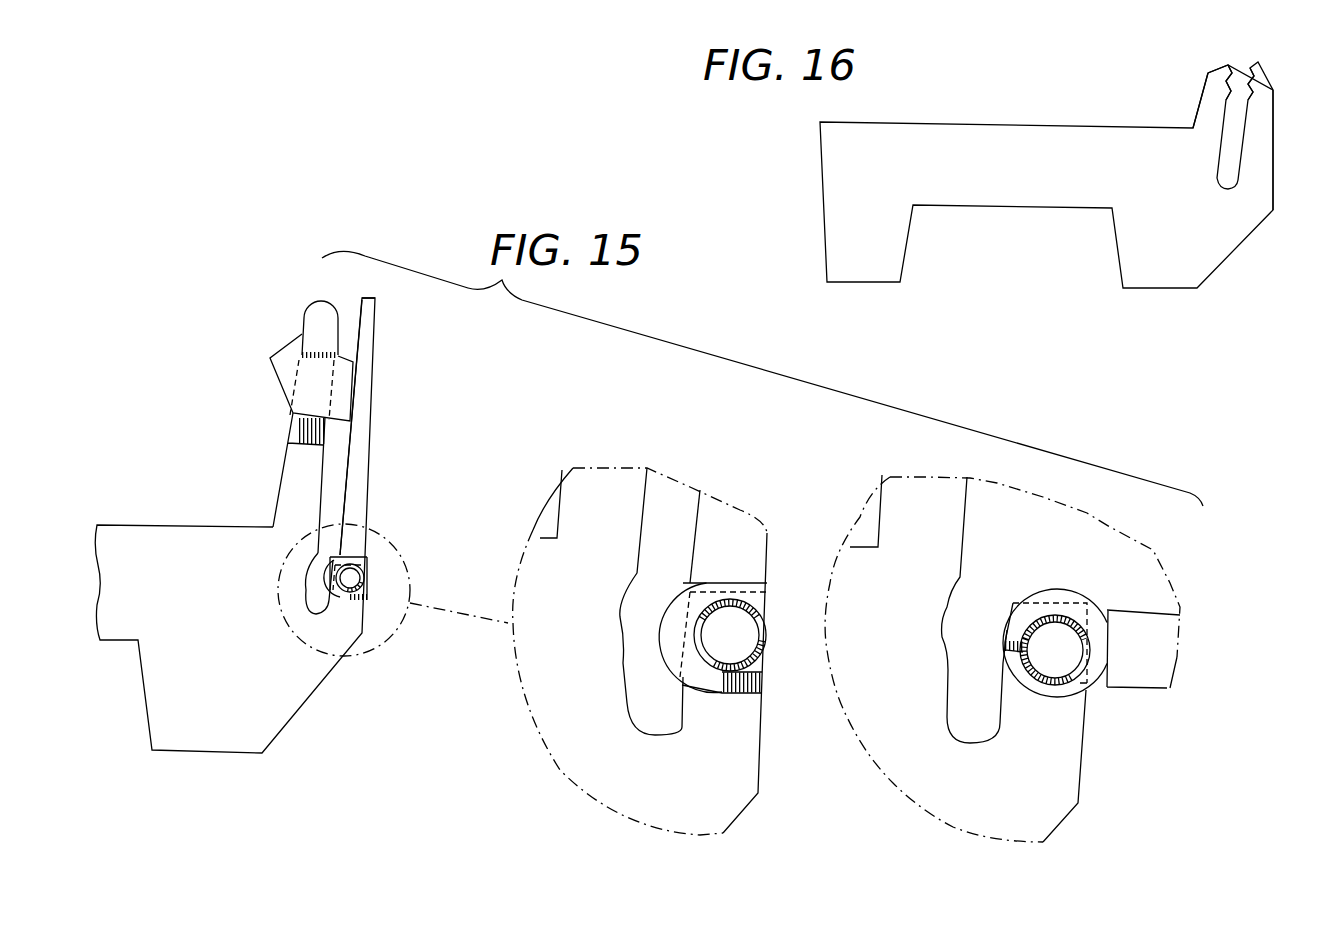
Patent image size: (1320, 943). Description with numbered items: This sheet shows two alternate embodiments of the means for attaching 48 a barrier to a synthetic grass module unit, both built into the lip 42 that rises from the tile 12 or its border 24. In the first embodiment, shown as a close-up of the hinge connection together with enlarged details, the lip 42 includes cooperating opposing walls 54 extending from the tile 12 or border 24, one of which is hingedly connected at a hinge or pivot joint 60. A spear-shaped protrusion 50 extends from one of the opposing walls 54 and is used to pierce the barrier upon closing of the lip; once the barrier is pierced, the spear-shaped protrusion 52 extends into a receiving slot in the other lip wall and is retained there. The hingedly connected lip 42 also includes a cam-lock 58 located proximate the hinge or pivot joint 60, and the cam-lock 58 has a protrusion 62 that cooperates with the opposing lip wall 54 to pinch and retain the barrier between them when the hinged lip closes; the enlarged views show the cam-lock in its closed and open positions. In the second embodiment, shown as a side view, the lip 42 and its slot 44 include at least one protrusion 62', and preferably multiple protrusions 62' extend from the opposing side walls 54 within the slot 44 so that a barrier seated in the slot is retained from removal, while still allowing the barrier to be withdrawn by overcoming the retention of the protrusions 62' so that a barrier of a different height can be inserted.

In FIG. 16, the tile 12 is at (1046, 175).
In FIG. 16, the border 24 is at (1053, 176).
In FIG. 15, the border 24 is at (233, 664).
In FIG. 16, the lip 42 is at (1238, 58).
In FIG. 15, the lip 42 is at (378, 294).
In FIG. 16, the slot 44 is at (1238, 117).
In FIG. 15, the means for attaching 48 is at (270, 462).
In FIG. 15, the spear-shaped protrusion 50 is at (283, 335).
In FIG. 15, the spear-shaped protrusion 52 is at (973, 715).
In FIG. 16, the opposing walls 54 is at (1210, 100).
In FIG. 15, the opposing walls 54 is at (322, 307).
In FIG. 15, the cam-lock 58 is at (764, 638).
In FIG. 15, the hinge or pivot joint 60 is at (376, 577).
In FIG. 15, the protrusion 62 is at (870, 624).
In FIG. 16, the protrusion 62' is at (1256, 64).